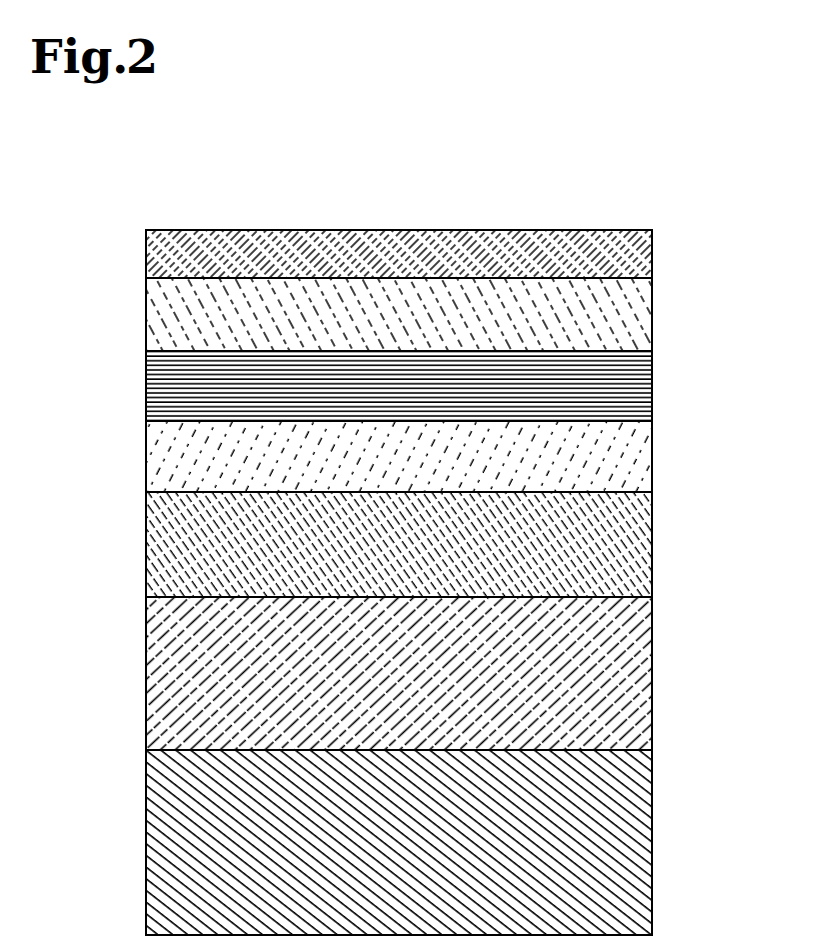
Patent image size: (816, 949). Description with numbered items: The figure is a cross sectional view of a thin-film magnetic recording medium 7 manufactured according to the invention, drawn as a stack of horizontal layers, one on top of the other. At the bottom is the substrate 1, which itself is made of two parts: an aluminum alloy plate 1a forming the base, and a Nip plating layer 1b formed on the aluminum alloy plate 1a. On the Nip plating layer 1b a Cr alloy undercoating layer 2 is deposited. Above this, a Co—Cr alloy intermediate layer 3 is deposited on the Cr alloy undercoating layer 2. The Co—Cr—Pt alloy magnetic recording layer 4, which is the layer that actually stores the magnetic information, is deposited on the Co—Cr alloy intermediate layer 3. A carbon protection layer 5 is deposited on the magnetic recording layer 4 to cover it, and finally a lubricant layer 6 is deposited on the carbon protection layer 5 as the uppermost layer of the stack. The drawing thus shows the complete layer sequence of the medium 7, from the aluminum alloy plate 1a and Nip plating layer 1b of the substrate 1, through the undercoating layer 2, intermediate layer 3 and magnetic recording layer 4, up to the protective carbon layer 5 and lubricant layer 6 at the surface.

The thin-film magnetic recording medium 7 is at (453, 541).
The lubricant layer 6 is at (632, 256).
The carbon protection layer 5 is at (636, 330).
The Co—Cr—Pt alloy magnetic recording layer 4 is at (655, 387).
The Co—Cr alloy intermediate layer 3 is at (640, 450).
The Cr alloy undercoating layer 2 is at (634, 545).
The substrate 1 is at (453, 766).
The Nip plating layer 1b is at (640, 680).
The aluminum alloy plate 1a is at (428, 842).